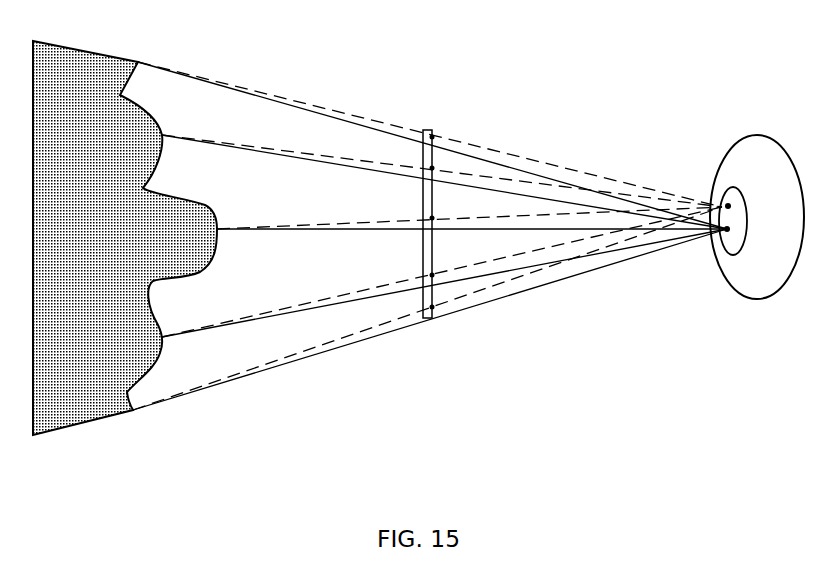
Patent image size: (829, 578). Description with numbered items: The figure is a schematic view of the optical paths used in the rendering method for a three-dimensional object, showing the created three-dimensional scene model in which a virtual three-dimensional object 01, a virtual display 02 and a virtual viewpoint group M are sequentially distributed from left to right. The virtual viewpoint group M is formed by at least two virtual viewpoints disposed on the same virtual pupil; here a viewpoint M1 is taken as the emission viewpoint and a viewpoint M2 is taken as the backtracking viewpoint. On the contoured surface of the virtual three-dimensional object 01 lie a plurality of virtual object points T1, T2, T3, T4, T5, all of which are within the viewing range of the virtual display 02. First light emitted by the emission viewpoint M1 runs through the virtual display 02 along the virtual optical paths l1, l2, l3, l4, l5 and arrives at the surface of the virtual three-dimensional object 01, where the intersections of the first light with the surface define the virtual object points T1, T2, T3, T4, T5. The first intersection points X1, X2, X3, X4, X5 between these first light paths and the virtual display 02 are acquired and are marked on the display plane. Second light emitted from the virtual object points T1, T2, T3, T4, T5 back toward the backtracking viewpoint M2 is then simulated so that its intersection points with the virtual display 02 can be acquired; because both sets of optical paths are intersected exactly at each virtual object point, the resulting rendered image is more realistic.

The virtual 3D object 01 is at (90, 410).
The virtual display 02 is at (430, 318).
The virtual viewpoint group M is at (732, 256).
The emission viewpoint M1 is at (744, 206).
The backtracking viewpoint M2 is at (743, 237).
The virtual object point T1 is at (144, 53).
The virtual object point T2 is at (173, 122).
The virtual object point T3 is at (228, 215).
The virtual object point T4 is at (172, 324).
The virtual object point T5 is at (151, 391).
The first intersection point X1 is at (416, 118).
The first intersection point X2 is at (410, 157).
The first intersection point X3 is at (410, 208).
The first intersection point X4 is at (409, 263).
The first intersection point X5 is at (409, 312).
The virtual optical path l1 is at (432, 145).
The virtual optical path l2 is at (444, 178).
The virtual optical path l3 is at (472, 213).
The virtual optical path l4 is at (444, 272).
The virtual optical path l5 is at (430, 308).